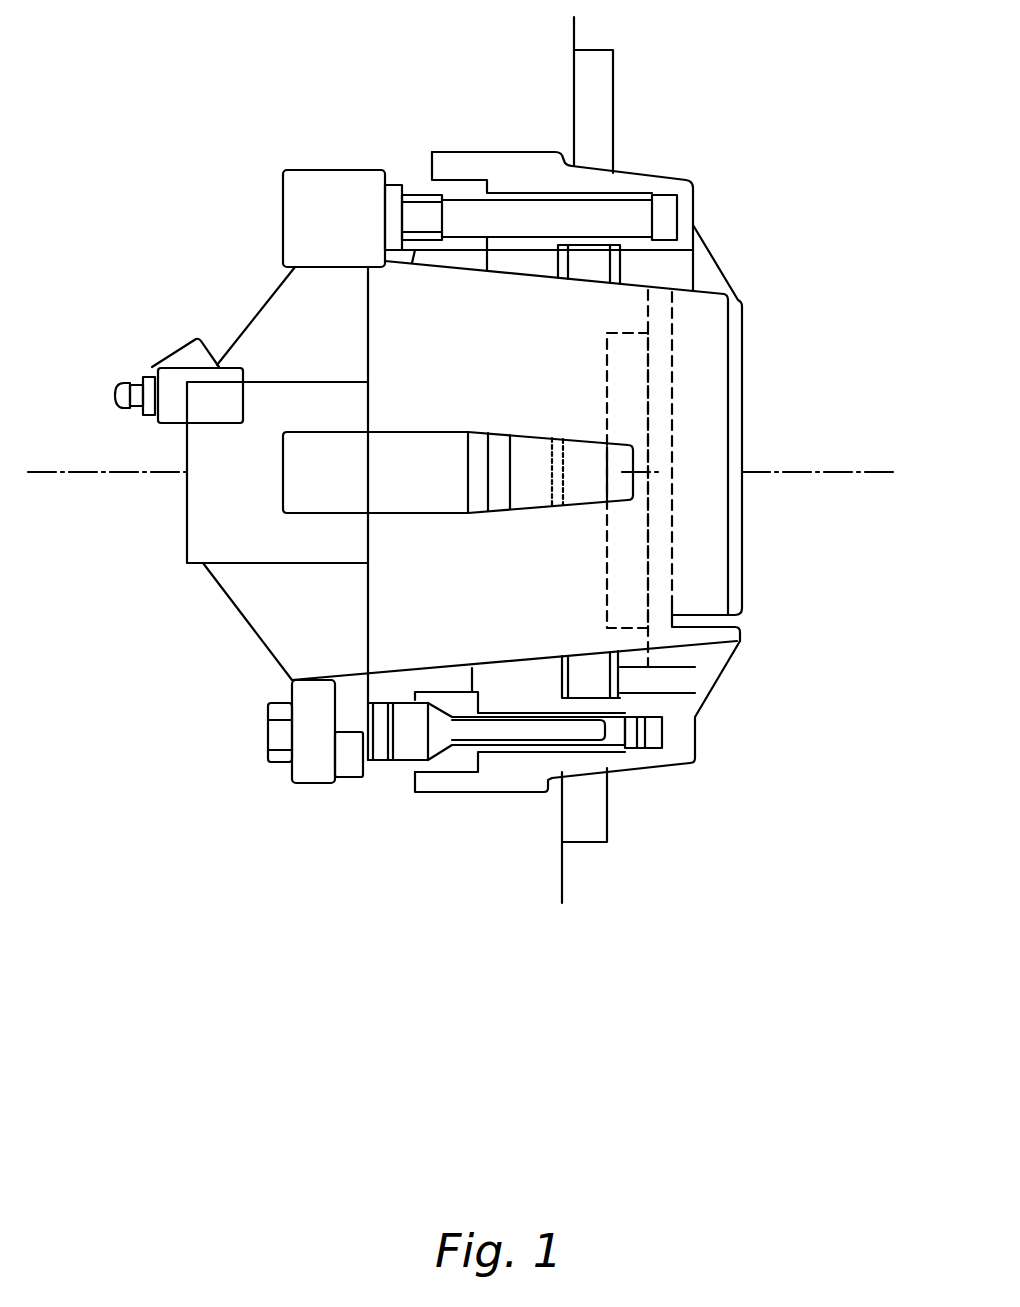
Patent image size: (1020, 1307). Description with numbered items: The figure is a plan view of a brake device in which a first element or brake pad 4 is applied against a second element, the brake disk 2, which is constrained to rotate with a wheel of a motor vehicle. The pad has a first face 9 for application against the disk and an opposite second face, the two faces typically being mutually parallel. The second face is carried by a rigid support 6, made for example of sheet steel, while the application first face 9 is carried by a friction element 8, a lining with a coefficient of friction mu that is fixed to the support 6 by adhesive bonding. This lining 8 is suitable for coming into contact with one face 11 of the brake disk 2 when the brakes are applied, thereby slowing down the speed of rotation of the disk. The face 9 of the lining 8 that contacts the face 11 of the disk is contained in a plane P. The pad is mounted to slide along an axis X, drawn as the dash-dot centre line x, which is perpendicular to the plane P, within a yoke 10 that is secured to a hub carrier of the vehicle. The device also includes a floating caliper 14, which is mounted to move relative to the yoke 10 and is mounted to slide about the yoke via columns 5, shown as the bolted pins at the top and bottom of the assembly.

The brake disk 2 is at (595, 110).
The brake pad 4 is at (540, 478).
The columns 5 is at (642, 213).
The rigid support 6 is at (663, 393).
The friction element 8 is at (622, 473).
The first face 9 is at (548, 497).
The yoke 10 is at (467, 132).
The face of the brake disk 11 is at (562, 822).
The floating caliper 14 is at (222, 626).
The axis X x is at (103, 478).
The plane P is at (562, 880).